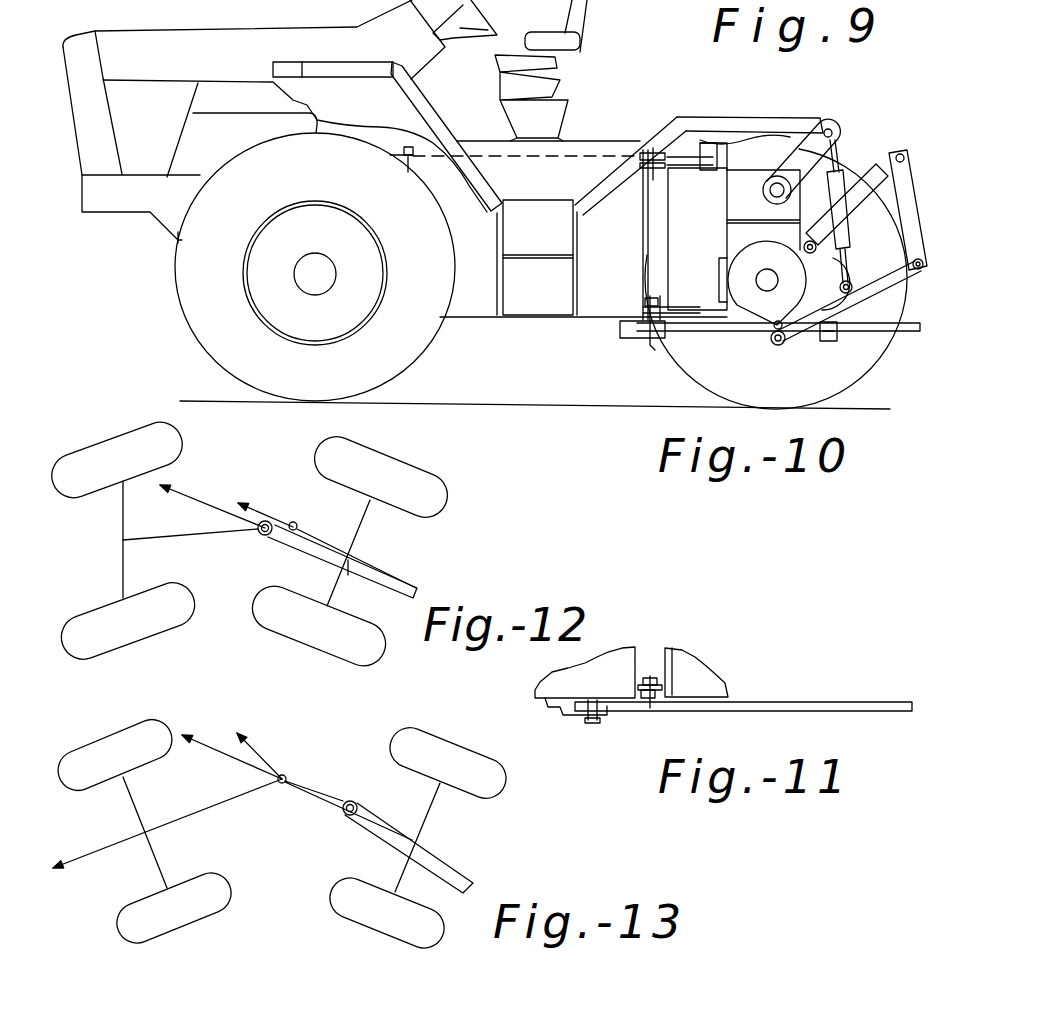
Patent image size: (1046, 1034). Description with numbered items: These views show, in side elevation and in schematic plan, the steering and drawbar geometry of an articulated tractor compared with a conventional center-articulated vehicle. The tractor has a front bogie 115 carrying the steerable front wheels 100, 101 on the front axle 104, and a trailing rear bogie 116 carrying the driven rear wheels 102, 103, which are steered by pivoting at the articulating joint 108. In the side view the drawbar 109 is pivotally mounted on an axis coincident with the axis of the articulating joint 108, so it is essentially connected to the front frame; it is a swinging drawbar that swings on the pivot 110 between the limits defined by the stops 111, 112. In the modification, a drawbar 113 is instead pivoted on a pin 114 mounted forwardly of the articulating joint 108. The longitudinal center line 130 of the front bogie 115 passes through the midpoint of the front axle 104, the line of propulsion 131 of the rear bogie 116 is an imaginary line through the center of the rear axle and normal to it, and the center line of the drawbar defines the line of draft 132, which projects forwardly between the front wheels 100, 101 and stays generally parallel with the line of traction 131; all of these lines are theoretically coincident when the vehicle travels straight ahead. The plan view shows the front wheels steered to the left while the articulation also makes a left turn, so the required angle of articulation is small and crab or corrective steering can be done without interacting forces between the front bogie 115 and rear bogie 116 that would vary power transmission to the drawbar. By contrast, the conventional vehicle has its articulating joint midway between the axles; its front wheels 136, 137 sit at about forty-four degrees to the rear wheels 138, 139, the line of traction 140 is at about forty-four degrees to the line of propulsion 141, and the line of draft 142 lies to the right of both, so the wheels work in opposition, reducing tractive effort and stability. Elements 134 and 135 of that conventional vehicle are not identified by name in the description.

In FIG. 12, the front wheel 100 is at (88, 428).
In FIG. 10, the front wheel 101 is at (203, 340).
In FIG. 12, the front wheel 101 is at (80, 622).
In FIG. 12, the rear wheel 102 is at (330, 648).
In FIG. 10, the rear wheel 103 is at (850, 396).
In FIG. 12, the rear wheel 103 is at (437, 488).
In FIG. 10, the front axle 104 is at (307, 290).
In FIG. 12, the front axle 104 is at (122, 568).
In FIG. 10, the articulating joint 108 is at (630, 302).
In FIG. 12, the articulating joint 108 is at (318, 490).
In FIG. 11, the articulating joint 108 is at (654, 666).
In FIG. 13, the articulating joint 108 is at (310, 744).
In FIG. 10, the drawbar 109 is at (750, 328).
In FIG. 10, the pivot 110 is at (652, 340).
In FIG. 12, the stop 111 is at (358, 530).
In FIG. 12, the stop 112 is at (340, 572).
In FIG. 12, the drawbar 113 is at (407, 582).
In FIG. 11, the drawbar 113 is at (815, 702).
In FIG. 12, the pin 114 is at (263, 535).
In FIG. 11, the pin 114 is at (593, 723).
In FIG. 10, the front bogie 115 is at (148, 220).
In FIG. 12, the front bogie 115 is at (137, 414).
In FIG. 10, the rear bogie 116 is at (743, 165).
In FIG. 12, the rear bogie 116 is at (403, 460).
In FIG. 12, the longitudinal center line 130 is at (170, 535).
In FIG. 12, the line of propulsion 131 is at (270, 505).
In FIG. 12, the line of draft 132 is at (193, 497).
In FIG. 13, the front wheel 134 is at (125, 700).
In FIG. 13, the rear wheel 135 is at (449, 738).
In FIG. 13, the front wheel 136 is at (225, 858).
In FIG. 13, the front wheel 137 is at (77, 752).
In FIG. 13, the rear wheel 138 is at (347, 913).
In FIG. 13, the rear wheel 139 is at (493, 790).
In FIG. 13, the line of traction 140 is at (92, 855).
In FIG. 13, the line of propulsion 141 is at (236, 758).
In FIG. 13, the line of draft 142 is at (255, 743).